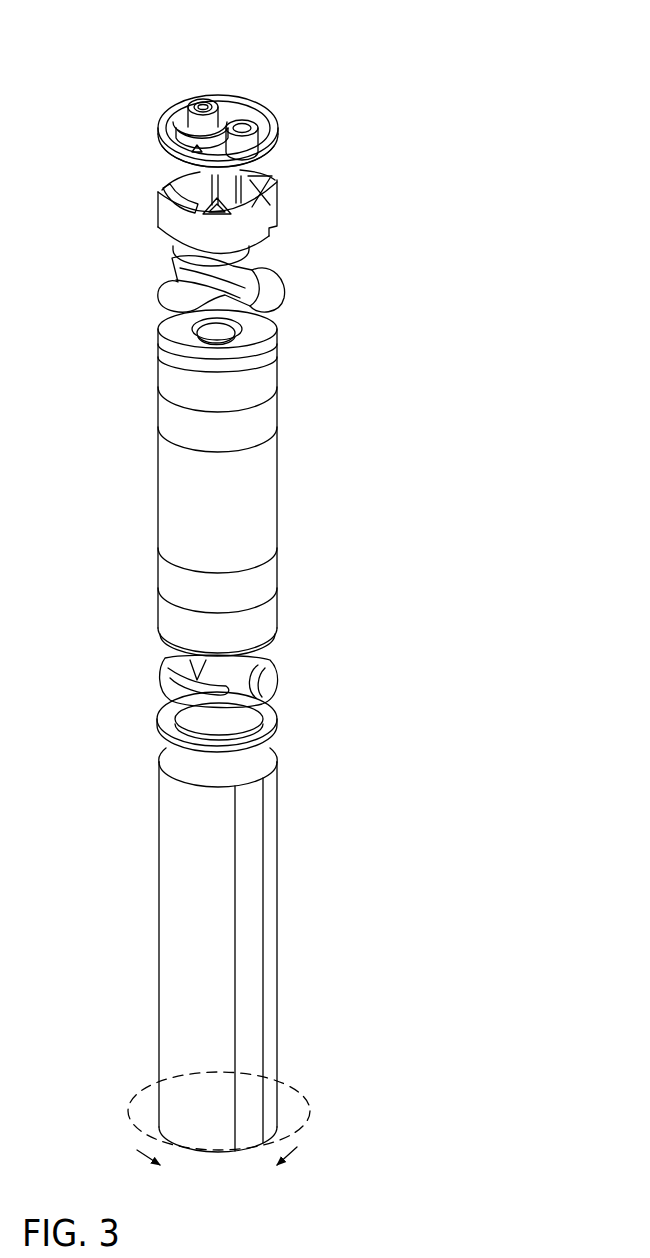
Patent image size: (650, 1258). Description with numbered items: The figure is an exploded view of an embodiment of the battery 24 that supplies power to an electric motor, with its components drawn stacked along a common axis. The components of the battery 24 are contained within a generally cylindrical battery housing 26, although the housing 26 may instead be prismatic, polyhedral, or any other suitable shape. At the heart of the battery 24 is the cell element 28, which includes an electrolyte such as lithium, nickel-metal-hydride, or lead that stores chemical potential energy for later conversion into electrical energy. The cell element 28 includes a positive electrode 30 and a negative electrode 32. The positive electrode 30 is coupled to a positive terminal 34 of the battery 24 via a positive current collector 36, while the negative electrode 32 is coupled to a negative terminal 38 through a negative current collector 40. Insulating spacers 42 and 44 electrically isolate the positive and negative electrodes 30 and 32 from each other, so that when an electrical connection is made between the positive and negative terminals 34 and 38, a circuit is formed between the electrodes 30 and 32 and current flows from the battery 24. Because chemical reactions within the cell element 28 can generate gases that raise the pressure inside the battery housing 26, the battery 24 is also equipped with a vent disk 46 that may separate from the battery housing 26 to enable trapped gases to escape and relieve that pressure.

The battery 24 is at (283, 30).
The battery housing 26 is at (247, 942).
The cell element 28 is at (270, 482).
The positive electrode 30 is at (268, 612).
The negative electrode 32 is at (265, 330).
The positive terminal 34 is at (255, 140).
The positive current collector 36 is at (268, 670).
The negative terminal 38 is at (188, 108).
The negative current collector 40 is at (265, 287).
The insulating spacer 42 is at (273, 185).
The insulating spacer 44 is at (278, 728).
The vent disk 46 is at (307, 1137).